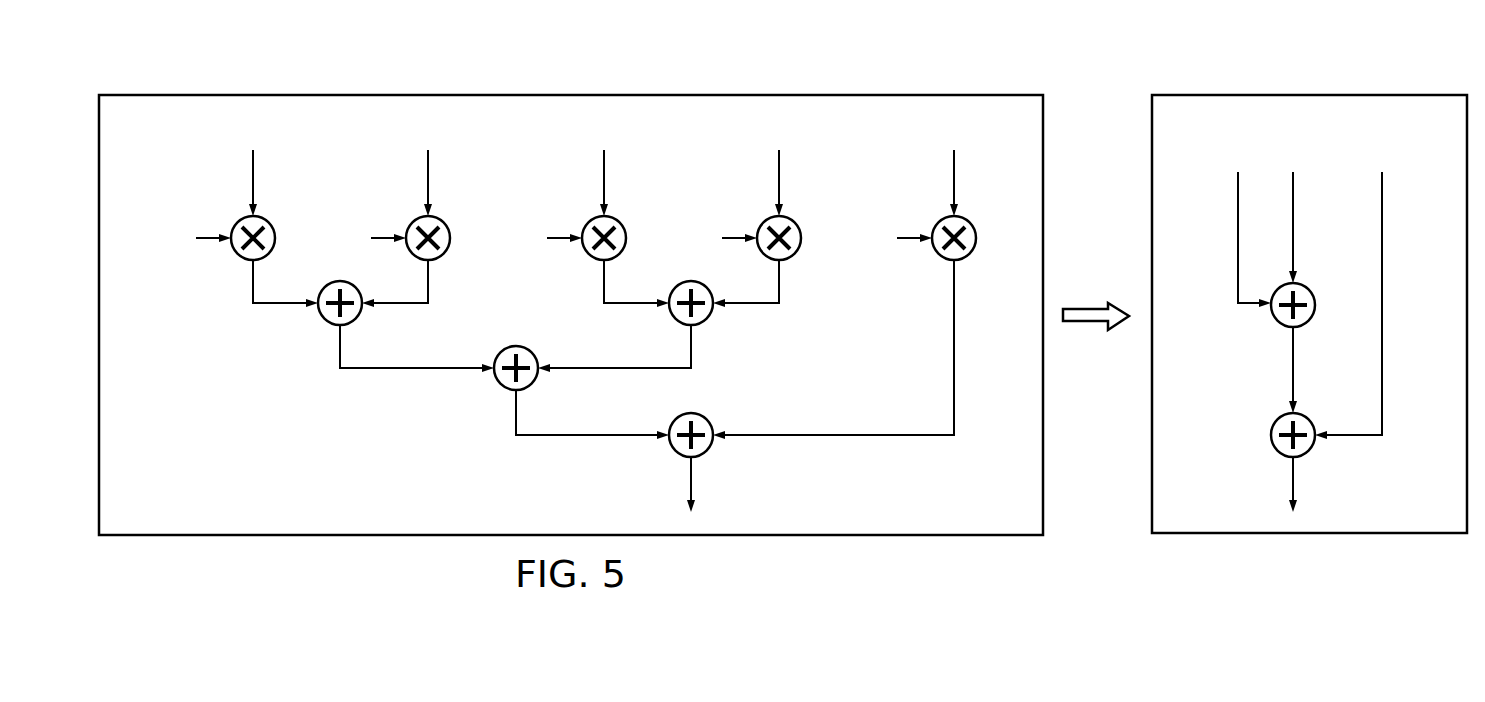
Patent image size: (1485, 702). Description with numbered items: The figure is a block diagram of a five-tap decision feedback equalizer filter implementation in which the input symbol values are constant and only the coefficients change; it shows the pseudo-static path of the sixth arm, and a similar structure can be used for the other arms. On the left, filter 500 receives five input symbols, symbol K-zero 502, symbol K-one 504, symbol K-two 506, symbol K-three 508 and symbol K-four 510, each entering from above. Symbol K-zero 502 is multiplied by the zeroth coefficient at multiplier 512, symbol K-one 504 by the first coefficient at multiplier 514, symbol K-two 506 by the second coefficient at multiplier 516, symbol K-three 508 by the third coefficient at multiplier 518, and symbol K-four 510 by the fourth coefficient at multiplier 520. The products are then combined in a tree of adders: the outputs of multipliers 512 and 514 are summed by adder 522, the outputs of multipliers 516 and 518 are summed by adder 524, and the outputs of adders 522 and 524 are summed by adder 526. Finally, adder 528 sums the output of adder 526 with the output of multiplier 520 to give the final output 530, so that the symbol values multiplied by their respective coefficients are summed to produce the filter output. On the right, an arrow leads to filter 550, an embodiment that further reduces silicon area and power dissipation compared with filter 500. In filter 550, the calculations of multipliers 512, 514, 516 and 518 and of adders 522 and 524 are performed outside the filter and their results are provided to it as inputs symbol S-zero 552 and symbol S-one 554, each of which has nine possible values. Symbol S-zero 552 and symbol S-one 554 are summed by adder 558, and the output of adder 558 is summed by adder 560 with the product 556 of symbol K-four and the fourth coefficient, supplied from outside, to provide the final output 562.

The filter 500 is at (537, 95).
The symbol K0 502 is at (252, 183).
The symbol K1 504 is at (427, 183).
The symbol K2 506 is at (605, 183).
The symbol K3 508 is at (780, 183).
The symbol K4 510 is at (955, 183).
The multiplier 512 is at (243, 261).
The multiplier 514 is at (438, 261).
The multiplier 516 is at (594, 261).
The multiplier 518 is at (789, 261).
The multiplier 520 is at (964, 261).
The adder 522 is at (323, 322).
The adder 524 is at (708, 322).
The adder 526 is at (499, 387).
The adder 528 is at (674, 455).
The final output 530 is at (694, 478).
The filter 550 is at (1338, 93).
The symbol S0 552 is at (1237, 227).
The symbol S1 554 is at (1295, 227).
The product of K4 and coeff_4 556 is at (1383, 227).
The adder 558 is at (1278, 323).
The adder 560 is at (1278, 453).
The final output 562 is at (1297, 478).